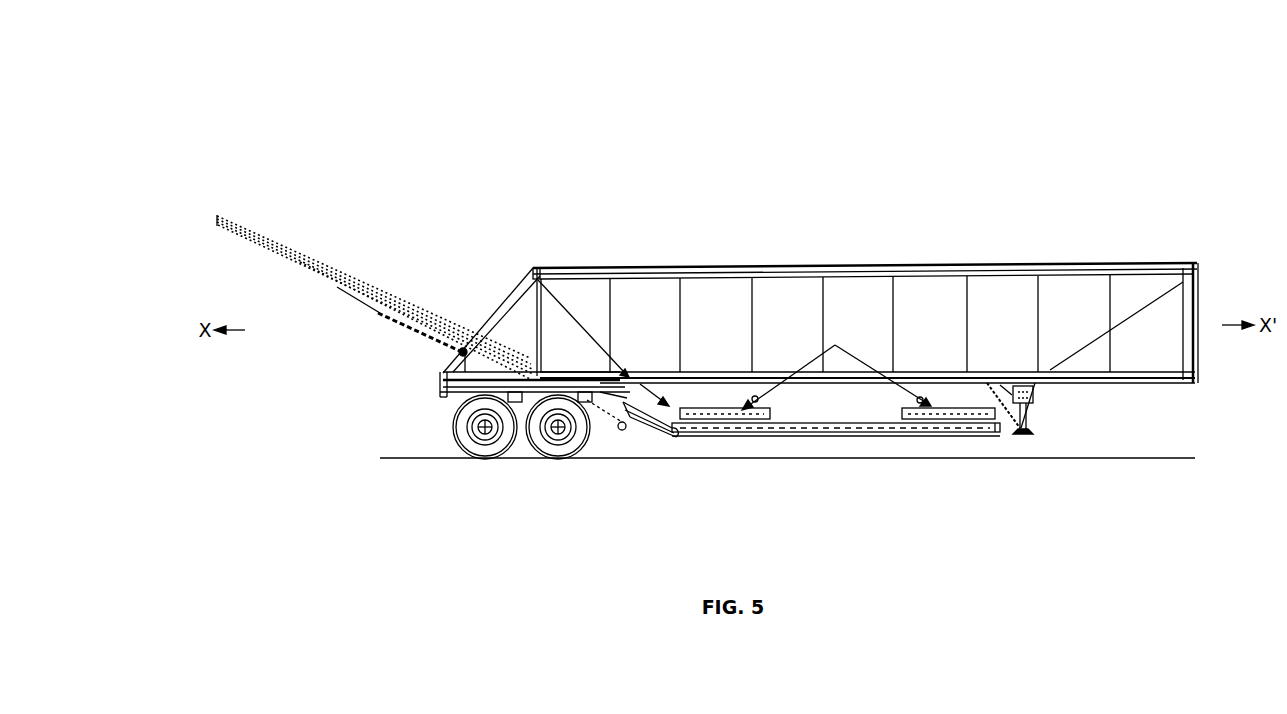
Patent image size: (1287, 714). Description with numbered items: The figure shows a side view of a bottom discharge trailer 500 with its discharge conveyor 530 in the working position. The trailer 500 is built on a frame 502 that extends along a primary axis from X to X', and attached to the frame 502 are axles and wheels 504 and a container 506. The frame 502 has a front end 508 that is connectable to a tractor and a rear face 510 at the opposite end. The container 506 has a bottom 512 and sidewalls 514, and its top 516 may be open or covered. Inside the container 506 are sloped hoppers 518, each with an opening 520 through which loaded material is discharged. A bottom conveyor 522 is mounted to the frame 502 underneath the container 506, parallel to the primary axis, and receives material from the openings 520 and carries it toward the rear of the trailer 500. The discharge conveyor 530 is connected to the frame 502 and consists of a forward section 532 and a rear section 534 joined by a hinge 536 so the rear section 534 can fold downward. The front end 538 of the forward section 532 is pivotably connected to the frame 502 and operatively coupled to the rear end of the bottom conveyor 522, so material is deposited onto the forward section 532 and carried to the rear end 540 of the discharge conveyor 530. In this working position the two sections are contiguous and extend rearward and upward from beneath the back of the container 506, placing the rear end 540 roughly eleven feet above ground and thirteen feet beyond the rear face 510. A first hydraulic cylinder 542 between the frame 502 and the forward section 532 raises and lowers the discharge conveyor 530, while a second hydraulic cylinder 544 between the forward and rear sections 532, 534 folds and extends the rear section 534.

The bottom discharge trailer 500 is at (1134, 100).
The frame 502 is at (1037, 390).
The axles and wheels 504 is at (493, 433).
The container 506 is at (698, 270).
The front end 508 is at (1198, 365).
The rear face 510 is at (440, 393).
The bottom 512 is at (777, 390).
The sidewalls 514 is at (785, 288).
The top 516 is at (913, 266).
The sloped hoppers 518 is at (678, 395).
The opening 520 is at (712, 419).
The bottom conveyor 522 is at (840, 436).
The discharge conveyor 530 is at (402, 180).
The forward section 532 is at (418, 312).
The rear section 534 is at (260, 247).
The hinge 536 is at (380, 313).
The front end 538 is at (605, 418).
The rear end 540 is at (219, 216).
The first hydraulic cylinder 542 is at (460, 355).
The second hydraulic cylinder 544 is at (417, 338).